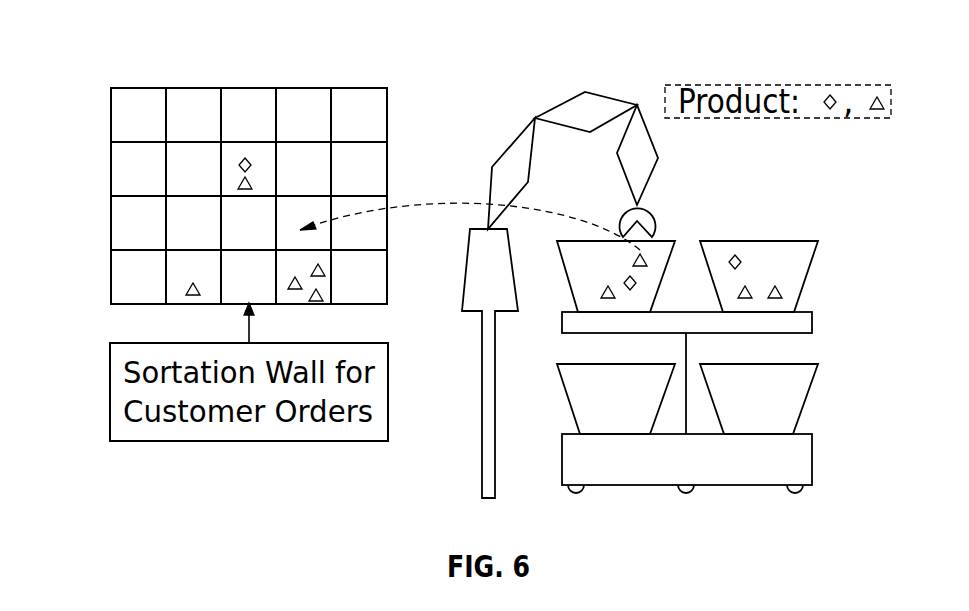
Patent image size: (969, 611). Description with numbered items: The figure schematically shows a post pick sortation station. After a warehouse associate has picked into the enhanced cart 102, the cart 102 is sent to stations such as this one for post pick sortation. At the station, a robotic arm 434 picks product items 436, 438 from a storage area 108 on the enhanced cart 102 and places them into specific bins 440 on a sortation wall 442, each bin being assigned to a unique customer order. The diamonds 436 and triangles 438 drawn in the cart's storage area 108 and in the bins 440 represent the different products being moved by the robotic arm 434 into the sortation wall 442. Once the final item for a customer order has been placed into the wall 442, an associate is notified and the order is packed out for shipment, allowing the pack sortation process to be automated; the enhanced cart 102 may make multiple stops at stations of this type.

The enhanced cart 102 is at (801, 463).
The storage area 108 is at (663, 241).
The robotic arm 434 is at (496, 156).
The product items (diamonds) 436 is at (825, 97).
The product items (triangles) 438 is at (886, 105).
The bins 440 is at (124, 98).
The sortation wall 442 is at (95, 265).